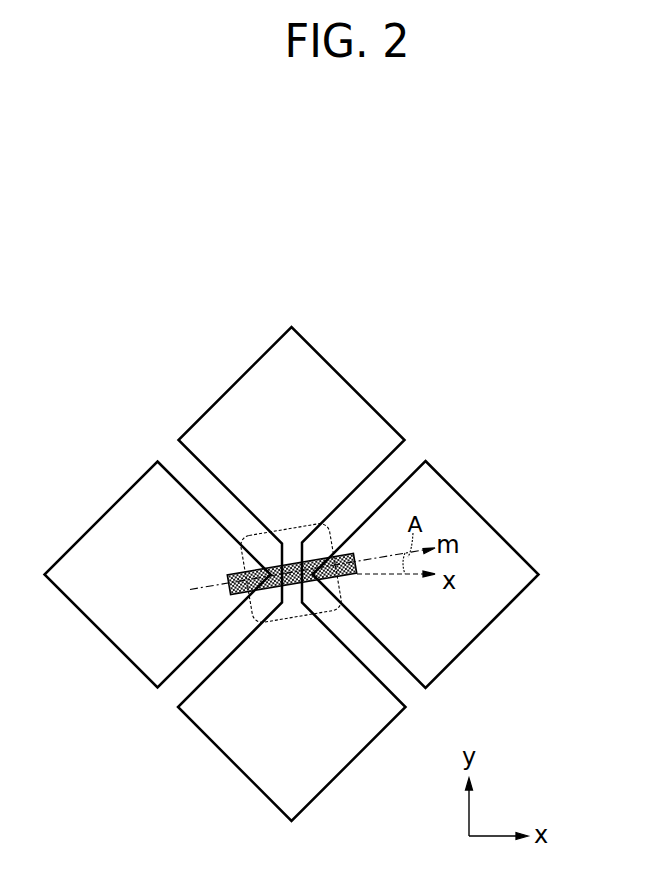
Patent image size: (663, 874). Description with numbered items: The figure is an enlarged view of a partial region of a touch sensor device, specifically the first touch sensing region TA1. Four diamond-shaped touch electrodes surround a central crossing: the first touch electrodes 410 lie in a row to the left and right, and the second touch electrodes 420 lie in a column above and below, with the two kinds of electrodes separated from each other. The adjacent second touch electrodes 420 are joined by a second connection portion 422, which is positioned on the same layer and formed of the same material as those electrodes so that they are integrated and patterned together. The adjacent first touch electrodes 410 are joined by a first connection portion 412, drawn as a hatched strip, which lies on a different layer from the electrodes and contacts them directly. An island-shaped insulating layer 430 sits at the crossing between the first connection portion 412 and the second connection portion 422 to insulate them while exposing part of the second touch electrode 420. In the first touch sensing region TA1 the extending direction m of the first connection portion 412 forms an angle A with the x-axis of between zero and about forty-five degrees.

The first touch sensing region TA1 is at (174, 381).
The first touch electrode 410 is at (112, 617).
The first connection portion 412 is at (230, 572).
The second touch electrode 420 is at (335, 405).
The second connection portion 422 is at (252, 533).
The insulating layer 430 is at (284, 612).